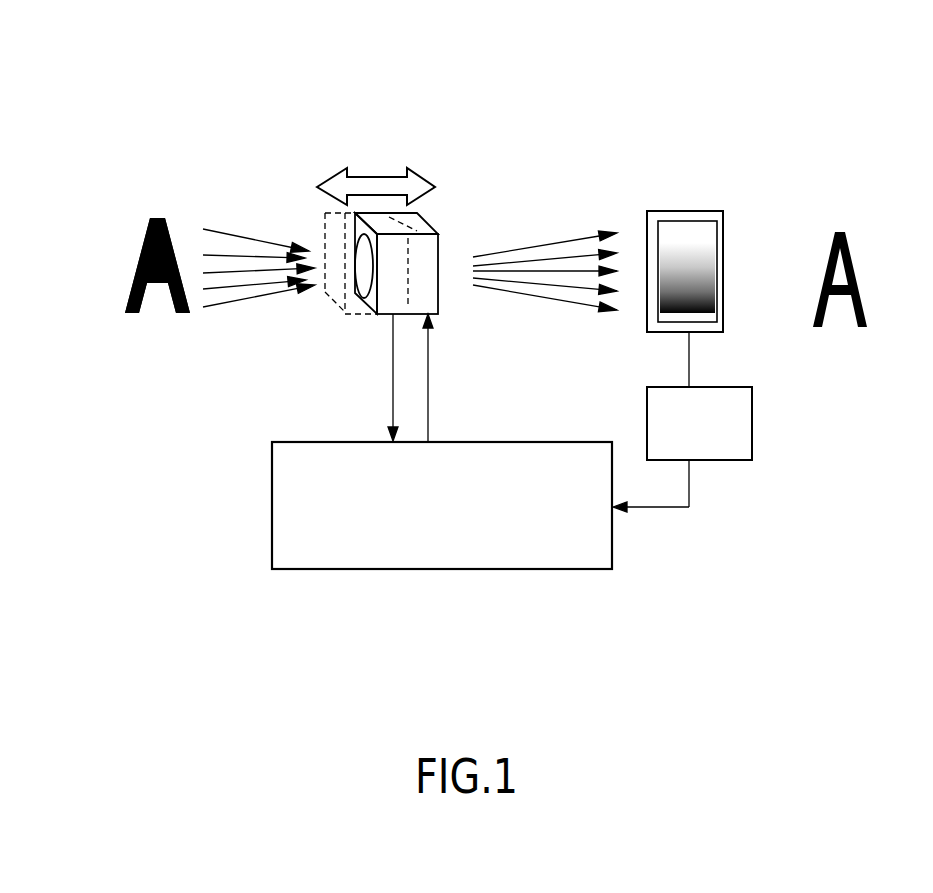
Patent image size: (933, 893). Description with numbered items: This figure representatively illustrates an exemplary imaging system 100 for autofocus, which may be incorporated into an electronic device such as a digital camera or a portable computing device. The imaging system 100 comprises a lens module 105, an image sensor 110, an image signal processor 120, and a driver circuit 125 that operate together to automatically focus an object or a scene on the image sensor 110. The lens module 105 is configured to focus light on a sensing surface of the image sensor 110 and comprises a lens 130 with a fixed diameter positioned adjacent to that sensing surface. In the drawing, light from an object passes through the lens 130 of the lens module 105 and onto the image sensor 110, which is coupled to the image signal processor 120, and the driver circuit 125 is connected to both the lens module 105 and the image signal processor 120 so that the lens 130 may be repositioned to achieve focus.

The imaging system 100 is at (120, 110).
The lens module 105 is at (420, 227).
The image sensor 110 is at (704, 210).
The image signal processor 120 is at (753, 423).
The driver circuit 125 is at (473, 570).
The lens 130 is at (356, 259).